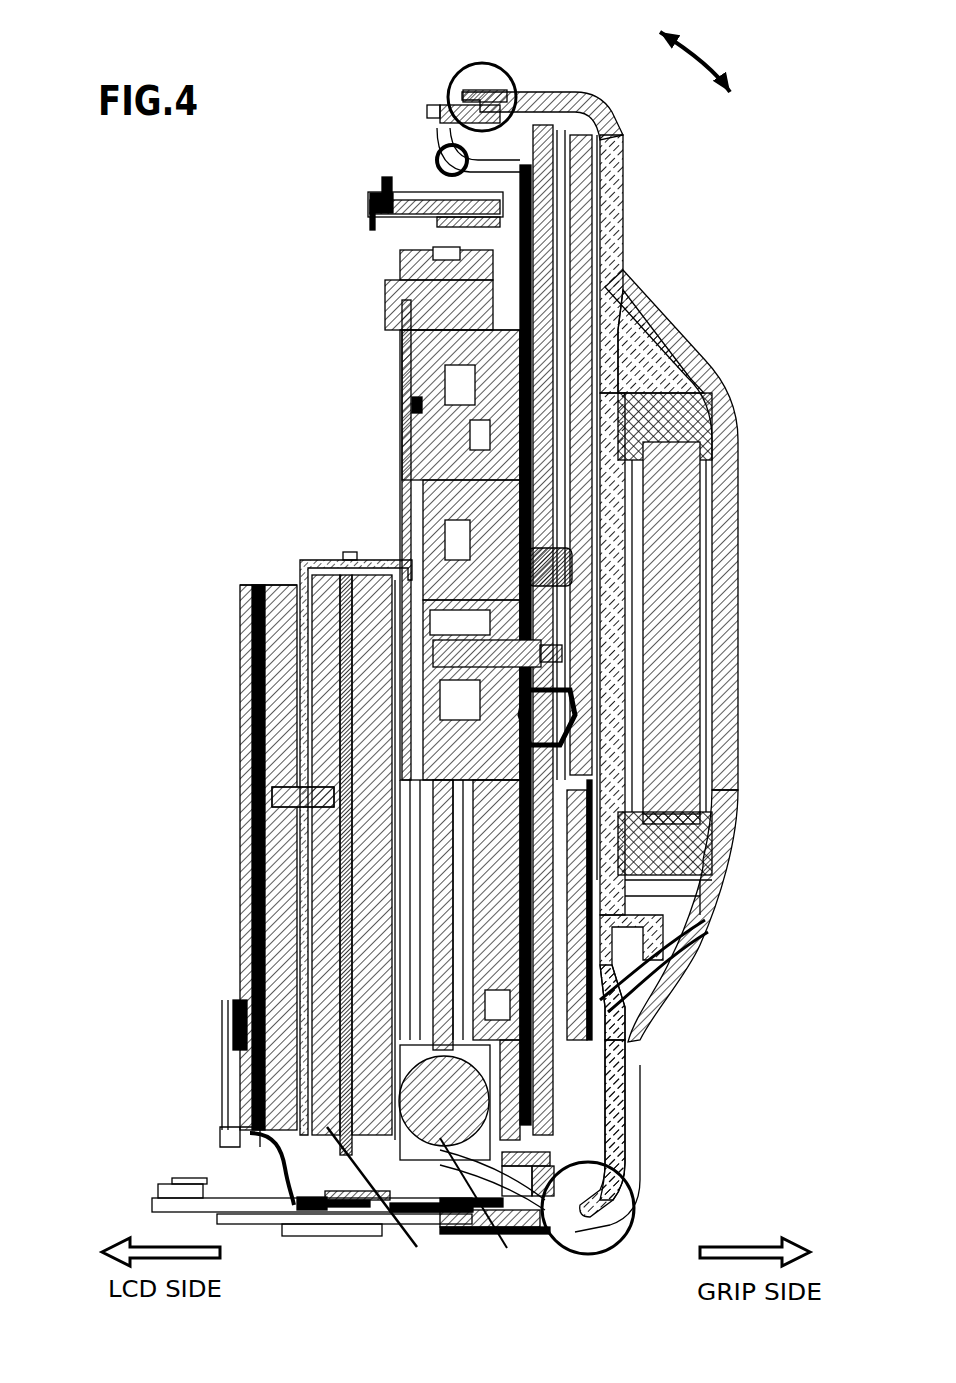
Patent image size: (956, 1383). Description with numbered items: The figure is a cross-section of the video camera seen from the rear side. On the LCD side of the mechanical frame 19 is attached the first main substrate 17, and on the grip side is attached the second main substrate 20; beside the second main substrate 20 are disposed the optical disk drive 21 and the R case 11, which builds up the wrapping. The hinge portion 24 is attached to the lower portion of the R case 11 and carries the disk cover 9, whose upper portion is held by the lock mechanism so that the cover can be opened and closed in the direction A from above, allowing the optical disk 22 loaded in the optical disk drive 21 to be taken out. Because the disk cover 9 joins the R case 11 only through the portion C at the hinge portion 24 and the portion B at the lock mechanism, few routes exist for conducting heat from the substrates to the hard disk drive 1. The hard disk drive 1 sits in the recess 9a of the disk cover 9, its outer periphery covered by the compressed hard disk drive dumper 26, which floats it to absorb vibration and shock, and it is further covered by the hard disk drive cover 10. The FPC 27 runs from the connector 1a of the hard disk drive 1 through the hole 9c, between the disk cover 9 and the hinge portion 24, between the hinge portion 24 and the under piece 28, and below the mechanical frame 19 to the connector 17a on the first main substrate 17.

The hard disk drive 1 is at (685, 500).
The connector 1a is at (704, 800).
The disk cover 9 is at (633, 343).
The recess 9a is at (654, 388).
The hole 9c is at (645, 995).
The hard disk drive cover 10 is at (745, 560).
The R case 11 is at (428, 108).
The first main substrate 17 is at (252, 633).
The connector 17a is at (239, 1010).
The mechanical frame 19 is at (309, 1138).
The second main substrate 20 is at (330, 581).
The optical disk drive 21 is at (490, 556).
The optical disk 22 is at (556, 216).
The hinge portion 24 is at (605, 937).
The hard disk drive dumper 26 is at (682, 845).
The FPC 27 is at (254, 1143).
The under piece 28 is at (517, 1174).
The open/close direction A is at (696, 60).
The lock mechanism portion B is at (503, 68).
The hinge portion connection C is at (652, 1197).